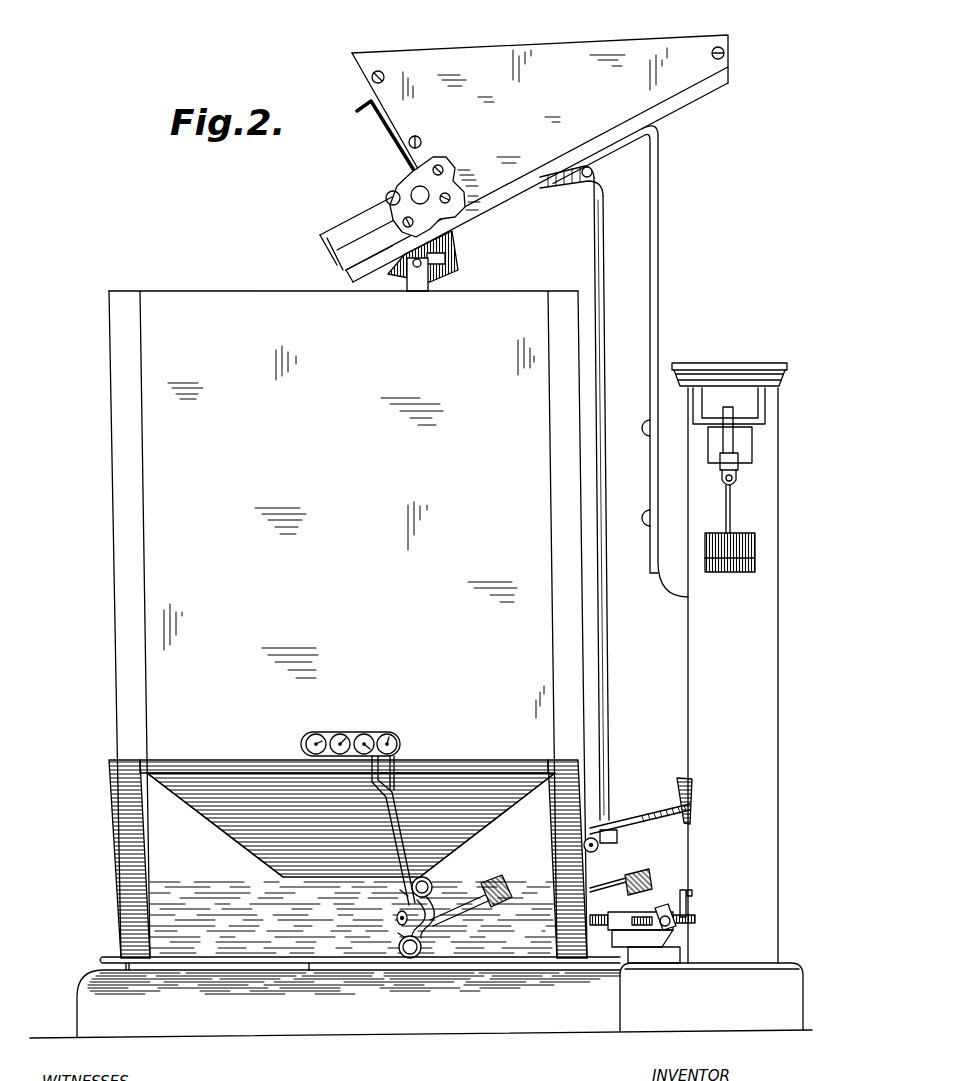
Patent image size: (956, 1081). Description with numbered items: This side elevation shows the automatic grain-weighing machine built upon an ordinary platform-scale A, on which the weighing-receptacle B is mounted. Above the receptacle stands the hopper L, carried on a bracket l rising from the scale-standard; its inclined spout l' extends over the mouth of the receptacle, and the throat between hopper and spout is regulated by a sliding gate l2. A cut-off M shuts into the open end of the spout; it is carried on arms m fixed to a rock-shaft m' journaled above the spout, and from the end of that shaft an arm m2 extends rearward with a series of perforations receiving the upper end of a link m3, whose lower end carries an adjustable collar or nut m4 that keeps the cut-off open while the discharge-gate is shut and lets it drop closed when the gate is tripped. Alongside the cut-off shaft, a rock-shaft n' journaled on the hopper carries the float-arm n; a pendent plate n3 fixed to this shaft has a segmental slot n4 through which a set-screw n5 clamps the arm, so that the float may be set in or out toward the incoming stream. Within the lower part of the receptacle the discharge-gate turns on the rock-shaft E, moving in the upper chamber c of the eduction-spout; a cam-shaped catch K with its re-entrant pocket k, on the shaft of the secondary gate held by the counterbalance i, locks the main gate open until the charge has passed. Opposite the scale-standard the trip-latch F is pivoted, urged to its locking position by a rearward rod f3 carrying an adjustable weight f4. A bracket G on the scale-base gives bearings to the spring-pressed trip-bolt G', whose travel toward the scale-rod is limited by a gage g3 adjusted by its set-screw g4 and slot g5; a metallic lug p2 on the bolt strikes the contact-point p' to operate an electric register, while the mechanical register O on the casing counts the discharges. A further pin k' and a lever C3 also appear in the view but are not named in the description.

The hopper L is at (537, 158).
The bracket l is at (620, 361).
The spout l' is at (369, 253).
The sliding gate l2 is at (403, 145).
The cut-off M is at (327, 257).
The arms m is at (367, 232).
The rock-shaft m' is at (415, 197).
The arm m2 is at (566, 188).
The link m3 is at (603, 278).
The adjustable collar or nut m4 is at (618, 836).
The float-arm n is at (401, 276).
The rock-shaft n' is at (430, 177).
The pendent ear or plate n3 is at (450, 242).
The segmental slot n4 is at (455, 262).
The set-screw n5 is at (418, 271).
The weighing-receptacle B is at (348, 624).
The register O is at (350, 735).
The platform-scale A is at (740, 625).
The rock-shaft E is at (428, 882).
The counterbalance i is at (500, 878).
The re-entrant curve or pocket k is at (387, 938).
The pin k' is at (388, 892).
The upper enlarged chamber c is at (388, 910).
The catch K is at (433, 927).
The trip-latch F is at (410, 958).
The gage g3 is at (583, 993).
The lever C3 is at (622, 822).
The arm or rod f3 is at (600, 888).
The adjustable weight f4 is at (643, 876).
The metallic lug p2 is at (688, 892).
The button or contact-point p' is at (697, 905).
The trip-bolt G' is at (601, 910).
The slot g5 is at (642, 918).
The bracket G is at (640, 932).
The set-screw g4 is at (672, 930).